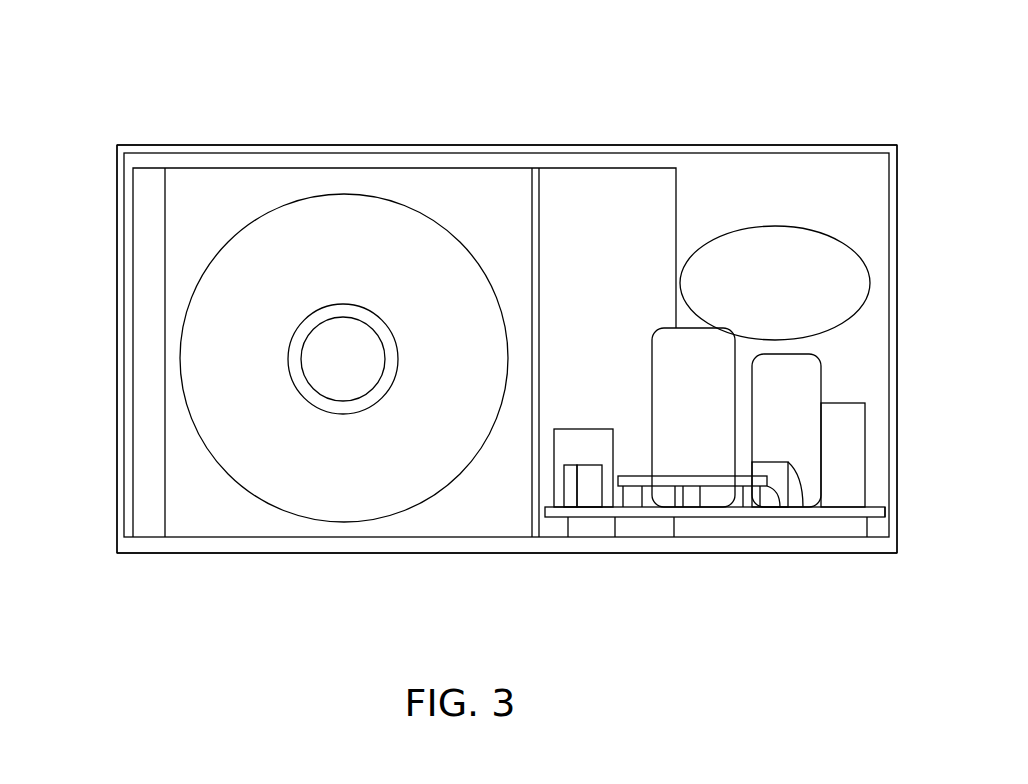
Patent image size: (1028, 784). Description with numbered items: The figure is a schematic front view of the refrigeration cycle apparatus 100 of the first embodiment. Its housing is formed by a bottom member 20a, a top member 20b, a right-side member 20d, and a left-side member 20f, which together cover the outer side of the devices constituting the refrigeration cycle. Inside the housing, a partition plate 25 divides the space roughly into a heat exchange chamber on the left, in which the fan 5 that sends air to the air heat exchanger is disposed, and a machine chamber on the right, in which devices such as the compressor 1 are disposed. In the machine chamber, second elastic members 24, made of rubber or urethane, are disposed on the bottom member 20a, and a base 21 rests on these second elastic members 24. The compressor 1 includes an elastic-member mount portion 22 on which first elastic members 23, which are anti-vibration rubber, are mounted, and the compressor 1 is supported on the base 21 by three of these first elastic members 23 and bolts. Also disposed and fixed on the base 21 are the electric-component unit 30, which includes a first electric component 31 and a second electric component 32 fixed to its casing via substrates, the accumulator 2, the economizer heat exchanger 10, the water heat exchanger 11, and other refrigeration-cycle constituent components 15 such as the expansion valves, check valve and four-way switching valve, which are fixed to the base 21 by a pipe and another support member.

The refrigeration cycle apparatus 100 is at (947, 135).
The left-side member 20f is at (117, 350).
The top member 20b is at (575, 145).
The right-side member 20d is at (897, 310).
The bottom member 20a is at (538, 553).
The partition plate 25 is at (532, 207).
The fan 5 is at (262, 468).
The other refrigeration-cycle constituent components 15 is at (830, 234).
The compressor 1 is at (698, 346).
The accumulator 2 is at (821, 375).
The water heat exchanger 11 is at (865, 452).
The elastic-member mount portion 22 is at (777, 517).
The first elastic members 23 is at (706, 520).
The economizer heat exchanger 10 is at (800, 517).
The base 21 is at (885, 514).
The second elastic members 24 is at (589, 527).
The electric-component unit 30 is at (548, 447).
The first electric component 31 is at (568, 483).
The second electric component 32 is at (563, 493).